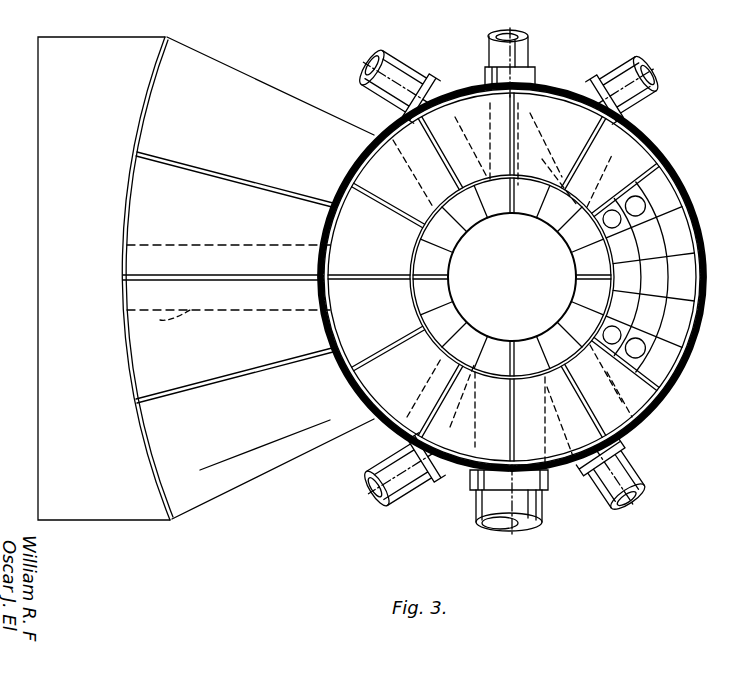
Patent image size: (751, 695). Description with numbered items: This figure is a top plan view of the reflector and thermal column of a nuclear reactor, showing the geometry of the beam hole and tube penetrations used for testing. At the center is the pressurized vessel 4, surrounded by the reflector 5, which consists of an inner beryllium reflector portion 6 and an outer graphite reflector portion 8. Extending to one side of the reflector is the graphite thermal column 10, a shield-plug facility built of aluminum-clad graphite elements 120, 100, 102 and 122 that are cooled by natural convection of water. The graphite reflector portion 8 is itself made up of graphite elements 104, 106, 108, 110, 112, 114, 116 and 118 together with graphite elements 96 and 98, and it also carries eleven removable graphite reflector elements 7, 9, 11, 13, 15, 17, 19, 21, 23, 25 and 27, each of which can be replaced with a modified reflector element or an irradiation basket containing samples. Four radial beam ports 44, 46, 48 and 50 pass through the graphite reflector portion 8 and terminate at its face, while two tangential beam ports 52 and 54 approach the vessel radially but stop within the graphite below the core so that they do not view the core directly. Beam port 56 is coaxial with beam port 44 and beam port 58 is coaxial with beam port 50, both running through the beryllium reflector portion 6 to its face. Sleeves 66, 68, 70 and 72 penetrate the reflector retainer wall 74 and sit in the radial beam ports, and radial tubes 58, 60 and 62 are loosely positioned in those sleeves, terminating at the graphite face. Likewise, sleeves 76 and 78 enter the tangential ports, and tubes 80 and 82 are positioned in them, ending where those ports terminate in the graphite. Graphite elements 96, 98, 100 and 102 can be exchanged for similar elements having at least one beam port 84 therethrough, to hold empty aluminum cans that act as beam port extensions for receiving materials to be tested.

The pressurized vessel 4 is at (698, 540).
The reflector 5 is at (712, 24).
The inner beryllium reflector portion 6 is at (570, 273).
The removable graphite reflector element 7 is at (648, 277).
The outer graphite reflector portion 8 is at (473, 99).
The removable graphite reflector element 9 is at (621, 276).
The thermal column 10 is at (112, 376).
The removable graphite reflector element 11 is at (625, 304).
The removable graphite reflector element 13 is at (653, 240).
The removable graphite reflector element 15 is at (654, 276).
The removable graphite reflector element 17 is at (654, 312).
The removable graphite reflector element 19 is at (663, 186).
The removable graphite reflector element 21 is at (688, 228).
The removable graphite reflector element 23 is at (690, 275).
The removable graphite reflector element 25 is at (687, 320).
The removable graphite reflector element 27 is at (663, 365).
The radial beam port 44 is at (531, 433).
The radial beam port 46 is at (592, 379).
The radial beam port 48 is at (387, 167).
The radial beam port 50 is at (540, 118).
The tangential beam port 52 is at (603, 149).
The tangential beam port 54 is at (398, 385).
The beam port 56 is at (528, 352).
The beam port / radial tube 58 is at (524, 216).
The radial tube 60 is at (658, 470).
The radial tube 62 is at (405, 62).
The sleeve 66 is at (545, 484).
The sleeve 68 is at (528, 55).
The sleeve 70 is at (388, 118).
The sleeve 72 is at (536, 82).
The reflector retainer wall 74 is at (455, 470).
The sleeve 76 is at (645, 116).
The sleeve 78 is at (398, 447).
The tube 80 is at (635, 72).
The tube 82 is at (395, 498).
The beam hole 84 is at (178, 320).
The graphite element 96 is at (369, 247).
The graphite element 98 is at (388, 340).
The graphite element 100 is at (232, 234).
The graphite element 102 is at (242, 357).
The graphite element 104 is at (623, 184).
The graphite element 106 is at (568, 159).
The graphite element 108 is at (468, 141).
The graphite element 110 is at (392, 184).
The graphite element 112 is at (428, 391).
The graphite element 114 is at (482, 413).
The graphite element 116 is at (563, 413).
The graphite element 118 is at (623, 377).
The graphite element 120 is at (248, 142).
The graphite element 122 is at (242, 450).